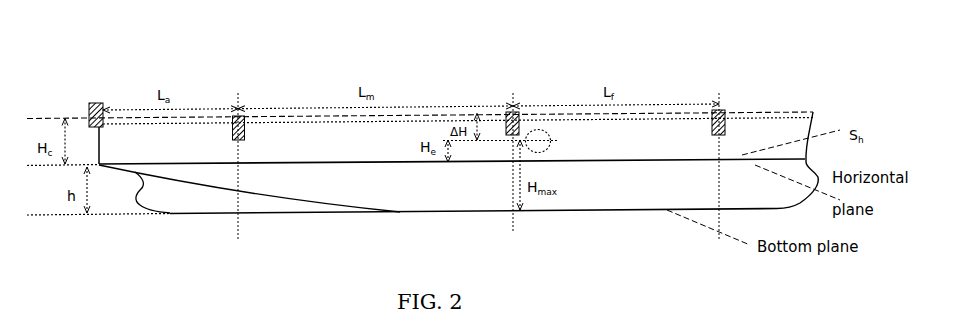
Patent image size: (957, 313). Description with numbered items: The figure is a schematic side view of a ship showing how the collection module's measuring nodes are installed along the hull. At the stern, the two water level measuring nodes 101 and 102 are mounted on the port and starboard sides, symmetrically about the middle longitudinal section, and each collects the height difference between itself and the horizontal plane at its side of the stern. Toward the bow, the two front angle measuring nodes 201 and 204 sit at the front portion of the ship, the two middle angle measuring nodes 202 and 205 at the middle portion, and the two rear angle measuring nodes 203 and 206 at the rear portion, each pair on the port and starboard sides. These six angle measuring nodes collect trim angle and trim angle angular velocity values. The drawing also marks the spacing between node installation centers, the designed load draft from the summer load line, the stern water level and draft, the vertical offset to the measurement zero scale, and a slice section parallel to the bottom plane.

The water level measuring node 101 is at (93, 101).
The water level measuring node 102 is at (93, 101).
The front angle measuring node 201 is at (713, 158).
The front angle measuring node 204 is at (713, 158).
The middle angle measuring node 202 is at (506, 154).
The middle angle measuring node 205 is at (506, 154).
The rear angle measuring node 203 is at (234, 158).
The rear angle measuring node 206 is at (234, 158).